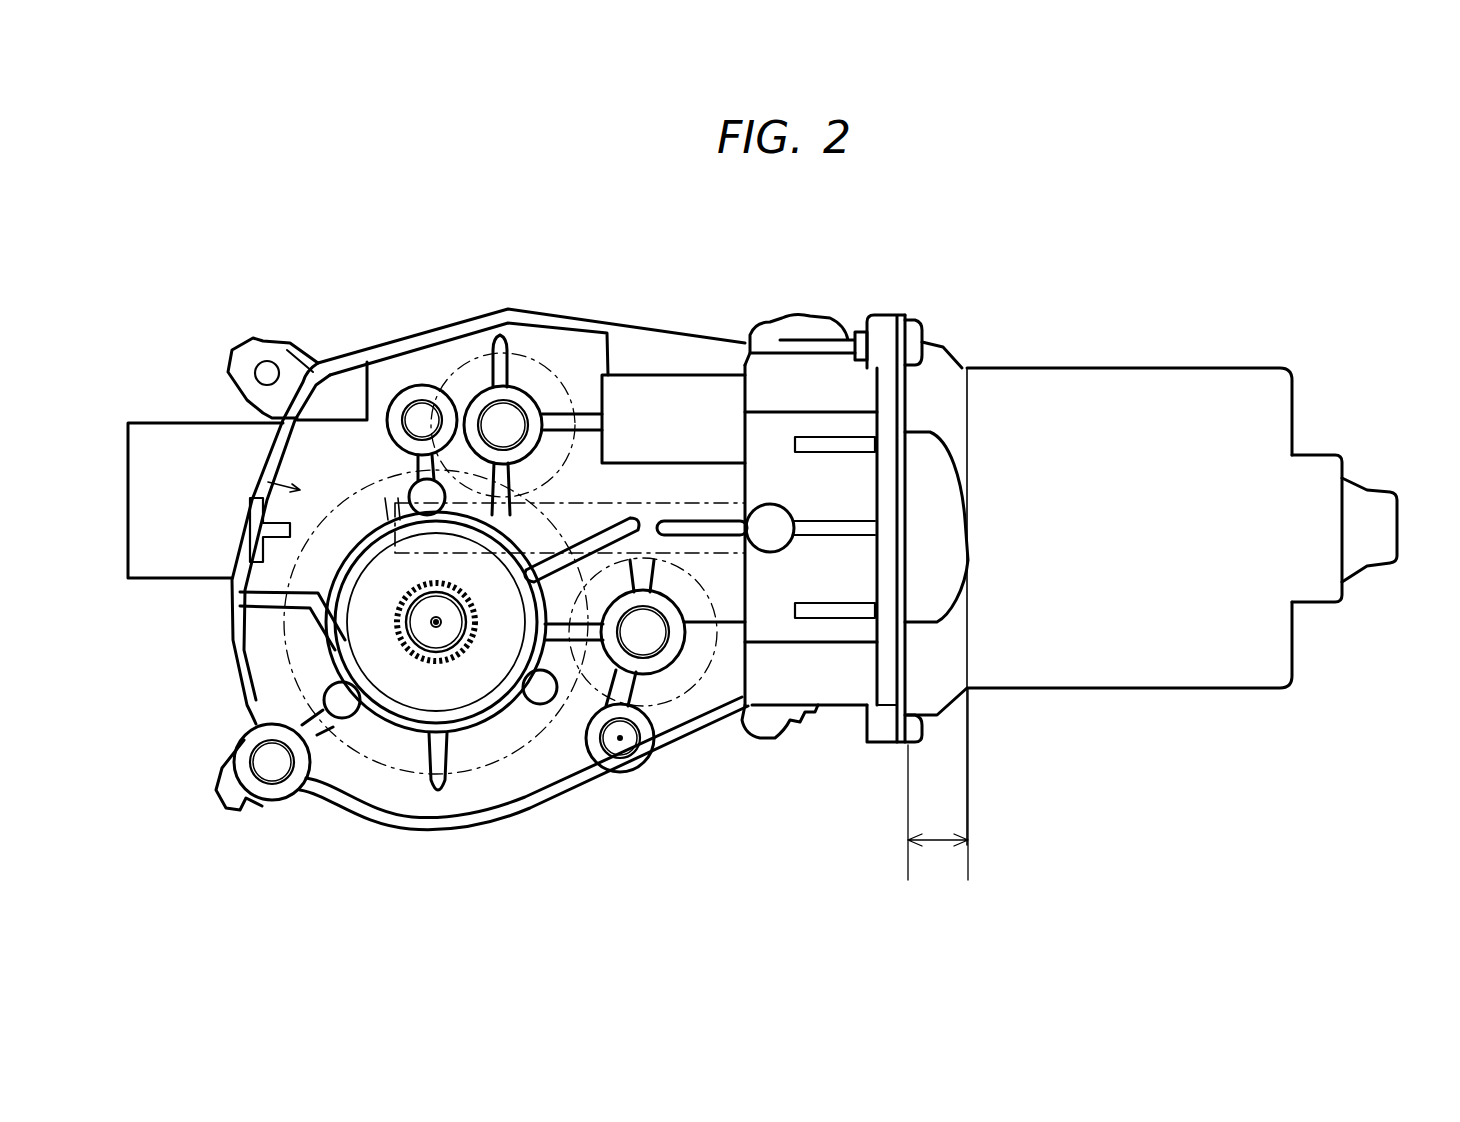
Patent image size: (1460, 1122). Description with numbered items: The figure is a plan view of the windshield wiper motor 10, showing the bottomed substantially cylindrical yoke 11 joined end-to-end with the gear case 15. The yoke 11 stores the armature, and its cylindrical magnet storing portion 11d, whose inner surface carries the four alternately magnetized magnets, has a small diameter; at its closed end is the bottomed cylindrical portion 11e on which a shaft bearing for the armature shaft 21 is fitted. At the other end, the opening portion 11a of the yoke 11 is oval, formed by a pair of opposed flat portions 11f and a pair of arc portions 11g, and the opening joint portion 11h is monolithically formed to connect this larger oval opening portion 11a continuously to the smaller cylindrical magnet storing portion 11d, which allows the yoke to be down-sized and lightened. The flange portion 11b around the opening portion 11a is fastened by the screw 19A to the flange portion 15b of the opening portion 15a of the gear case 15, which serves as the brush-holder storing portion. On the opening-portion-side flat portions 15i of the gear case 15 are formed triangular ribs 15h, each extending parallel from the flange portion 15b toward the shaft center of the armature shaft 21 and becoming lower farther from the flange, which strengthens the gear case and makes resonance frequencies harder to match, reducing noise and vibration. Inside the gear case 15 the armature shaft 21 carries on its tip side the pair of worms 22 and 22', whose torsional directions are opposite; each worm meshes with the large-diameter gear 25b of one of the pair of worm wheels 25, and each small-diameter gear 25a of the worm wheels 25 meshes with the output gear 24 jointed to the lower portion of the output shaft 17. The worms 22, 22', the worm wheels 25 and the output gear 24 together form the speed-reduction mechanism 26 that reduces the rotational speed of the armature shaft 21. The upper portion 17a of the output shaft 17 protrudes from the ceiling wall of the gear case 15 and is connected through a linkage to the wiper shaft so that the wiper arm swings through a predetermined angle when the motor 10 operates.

The windshield wiper motor 10 is at (784, 786).
The yoke 11 is at (1196, 360).
The opening portion 11a is at (893, 343).
The flange portion 11b is at (902, 313).
The magnet storing portion 11d is at (1193, 663).
The bottomed cylindrical portion 11e is at (1362, 480).
The flat portion 11f is at (930, 565).
The arc portion 11g is at (940, 378).
The opening joint portion 11h is at (938, 797).
The gear case 15 is at (699, 318).
The opening portion 15a is at (907, 658).
The flange portion 15b is at (888, 725).
The rib 15h is at (837, 610).
The opening-portion-side flat portion 15i is at (812, 425).
The output shaft 17 is at (418, 675).
The upper portion of output shaft 17a is at (445, 637).
The screw 19A is at (925, 330).
The armature shaft 21 is at (675, 492).
The worm 22 is at (559, 508).
The worm 22' is at (636, 430).
The output gear 24 is at (460, 830).
The worm wheel 25 is at (467, 346).
The small-diameter gear 25a is at (513, 345).
The large-diameter gear 25b is at (572, 380).
The speed-reduction mechanism 26 is at (267, 463).